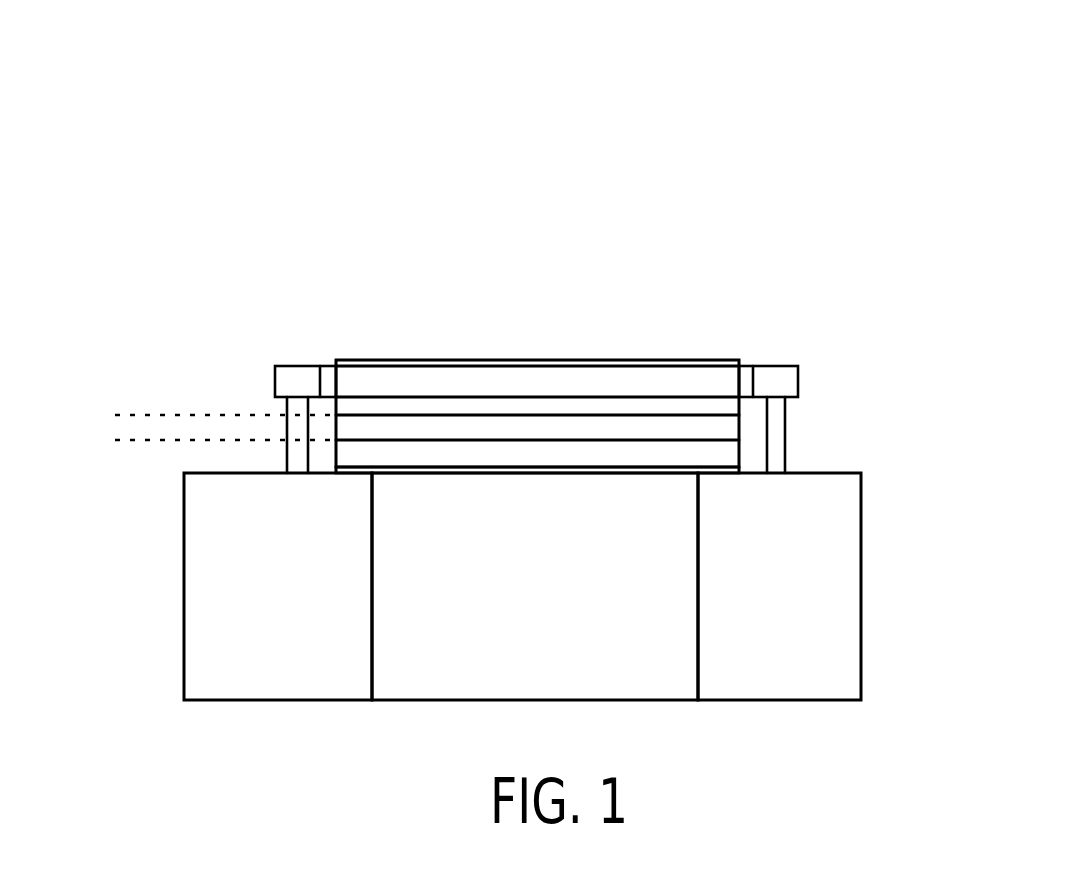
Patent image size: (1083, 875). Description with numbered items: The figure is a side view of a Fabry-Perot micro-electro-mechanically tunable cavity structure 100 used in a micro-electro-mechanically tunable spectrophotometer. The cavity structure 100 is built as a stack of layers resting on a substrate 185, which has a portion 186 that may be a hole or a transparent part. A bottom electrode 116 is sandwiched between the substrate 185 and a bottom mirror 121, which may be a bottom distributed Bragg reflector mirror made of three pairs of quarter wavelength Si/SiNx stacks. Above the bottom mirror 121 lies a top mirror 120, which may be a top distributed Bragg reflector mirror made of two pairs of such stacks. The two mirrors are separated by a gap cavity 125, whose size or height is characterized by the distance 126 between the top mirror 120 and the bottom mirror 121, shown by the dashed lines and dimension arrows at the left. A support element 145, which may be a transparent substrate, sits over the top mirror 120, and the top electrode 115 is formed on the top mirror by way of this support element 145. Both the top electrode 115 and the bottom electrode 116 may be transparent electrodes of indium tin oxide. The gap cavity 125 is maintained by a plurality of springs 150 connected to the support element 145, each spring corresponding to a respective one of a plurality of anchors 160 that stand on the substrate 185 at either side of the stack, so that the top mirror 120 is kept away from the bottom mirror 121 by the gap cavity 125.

The cavity structure 100 is at (706, 180).
The top electrode 115 is at (672, 358).
The bottom electrode 116 is at (573, 472).
The top mirror 120 is at (402, 405).
The bottom mirror 121 is at (433, 448).
The gap cavity 125 is at (608, 423).
The distance 126 is at (136, 355).
The support element 145 is at (520, 382).
The springs 150 is at (295, 365).
The anchors 160 is at (786, 425).
The substrate 185 is at (800, 641).
The portion 186 is at (562, 641).